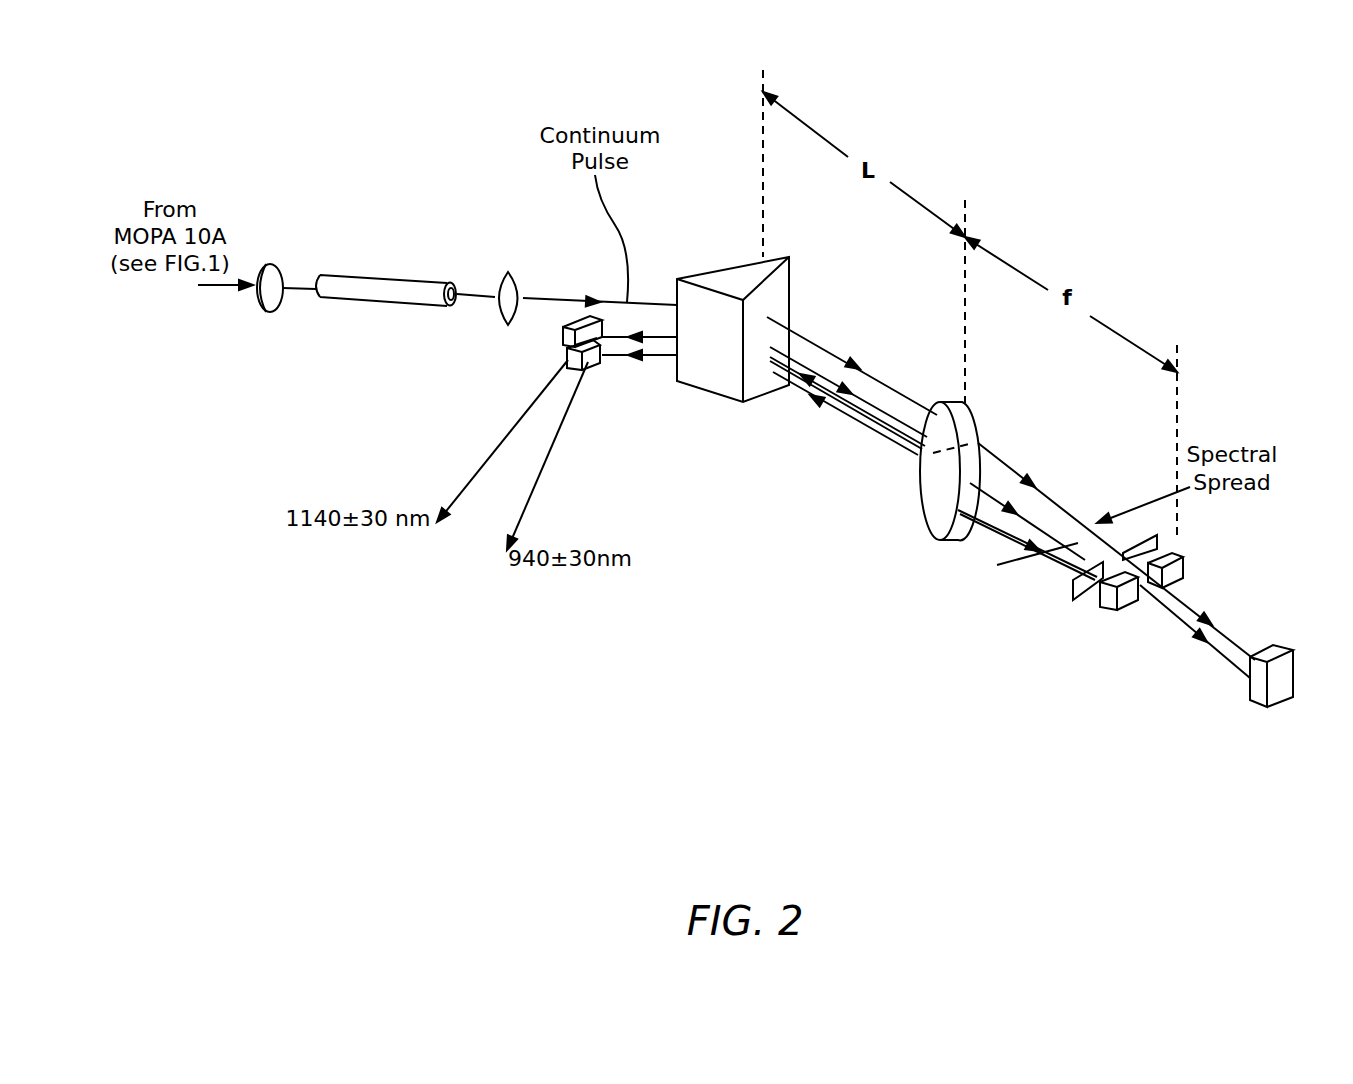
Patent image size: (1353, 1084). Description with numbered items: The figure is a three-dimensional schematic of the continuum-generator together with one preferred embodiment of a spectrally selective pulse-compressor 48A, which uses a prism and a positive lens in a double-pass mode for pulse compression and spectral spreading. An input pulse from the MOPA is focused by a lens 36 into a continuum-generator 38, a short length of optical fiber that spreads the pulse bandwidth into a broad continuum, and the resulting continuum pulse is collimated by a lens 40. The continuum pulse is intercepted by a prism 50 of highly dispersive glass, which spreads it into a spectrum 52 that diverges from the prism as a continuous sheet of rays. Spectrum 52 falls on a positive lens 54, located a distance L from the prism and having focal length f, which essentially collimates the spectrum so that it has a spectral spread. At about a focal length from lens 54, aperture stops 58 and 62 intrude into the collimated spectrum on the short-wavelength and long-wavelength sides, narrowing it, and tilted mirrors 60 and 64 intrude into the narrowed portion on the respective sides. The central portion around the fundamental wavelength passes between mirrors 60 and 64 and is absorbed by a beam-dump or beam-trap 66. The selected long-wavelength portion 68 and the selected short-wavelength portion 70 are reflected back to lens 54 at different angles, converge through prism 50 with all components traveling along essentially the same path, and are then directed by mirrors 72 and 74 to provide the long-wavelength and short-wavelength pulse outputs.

The lens 36 is at (274, 298).
The continuum-generator 38 is at (385, 278).
The lens 40 is at (510, 282).
The prism 50 is at (742, 267).
The spectrum 52 is at (880, 390).
The positive lens 54 is at (937, 527).
The aperture stop 58 is at (1078, 593).
The tilted mirror 60 is at (1130, 602).
The aperture stop 62 is at (1153, 547).
The tilted mirror 64 is at (1182, 575).
The beam-dump or beam-trap 66 is at (1258, 678).
The selected long-wavelength portion 68 is at (618, 337).
The selected short-wavelength portion 70 is at (660, 357).
The mirror 72 is at (563, 335).
The mirror 74 is at (593, 370).
The spectrally selective pulse-compressor 48A is at (698, 670).